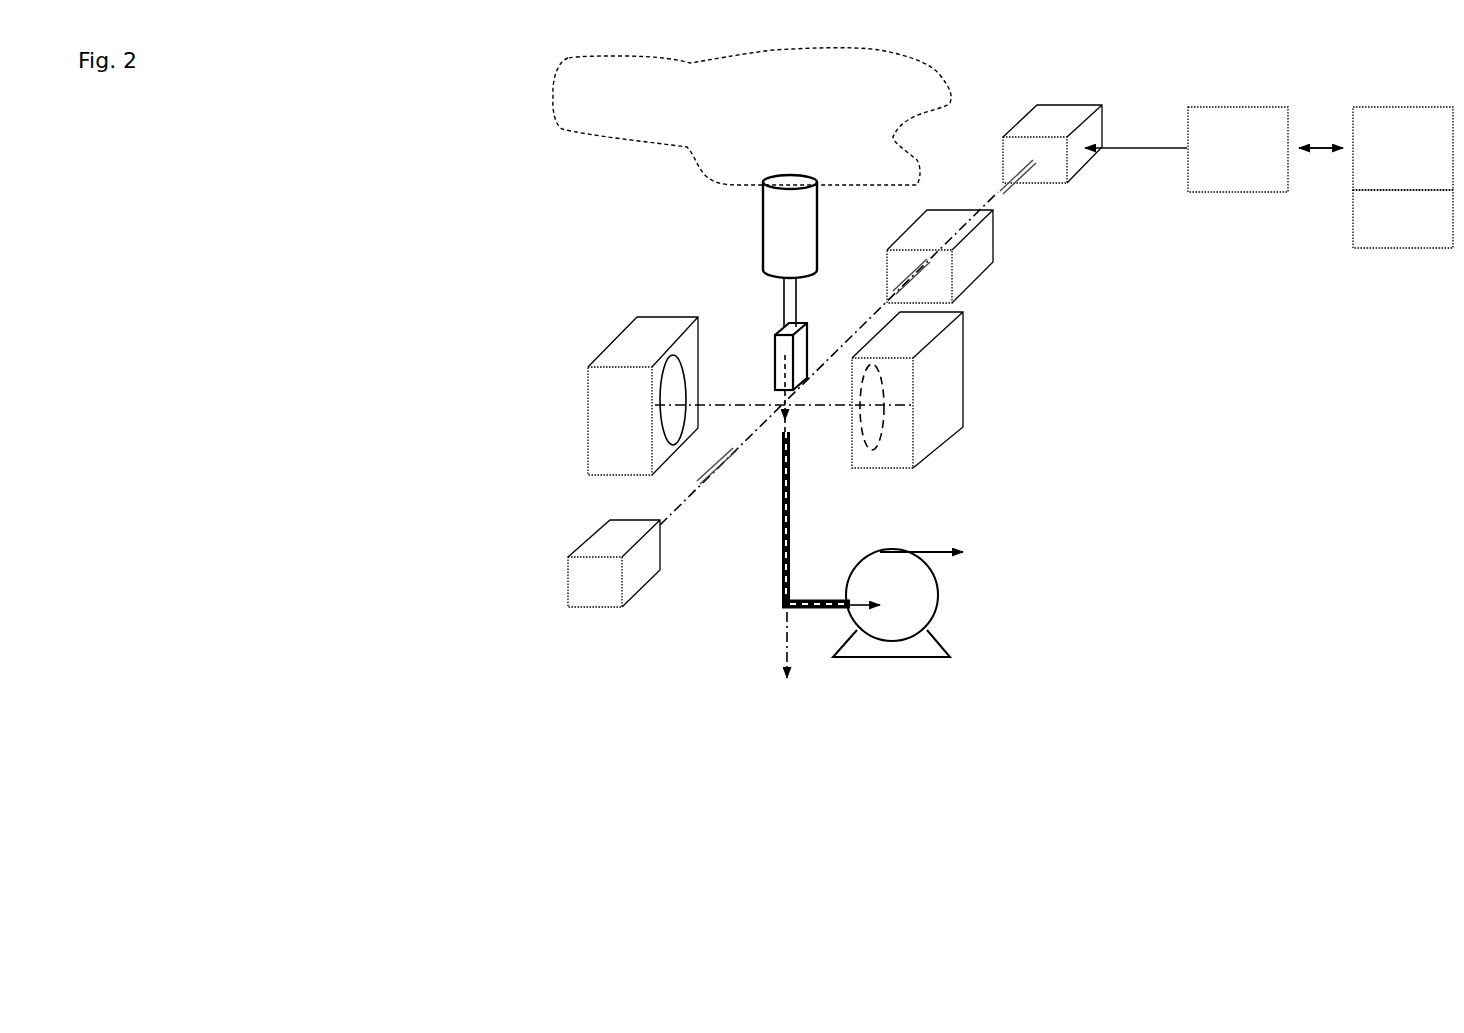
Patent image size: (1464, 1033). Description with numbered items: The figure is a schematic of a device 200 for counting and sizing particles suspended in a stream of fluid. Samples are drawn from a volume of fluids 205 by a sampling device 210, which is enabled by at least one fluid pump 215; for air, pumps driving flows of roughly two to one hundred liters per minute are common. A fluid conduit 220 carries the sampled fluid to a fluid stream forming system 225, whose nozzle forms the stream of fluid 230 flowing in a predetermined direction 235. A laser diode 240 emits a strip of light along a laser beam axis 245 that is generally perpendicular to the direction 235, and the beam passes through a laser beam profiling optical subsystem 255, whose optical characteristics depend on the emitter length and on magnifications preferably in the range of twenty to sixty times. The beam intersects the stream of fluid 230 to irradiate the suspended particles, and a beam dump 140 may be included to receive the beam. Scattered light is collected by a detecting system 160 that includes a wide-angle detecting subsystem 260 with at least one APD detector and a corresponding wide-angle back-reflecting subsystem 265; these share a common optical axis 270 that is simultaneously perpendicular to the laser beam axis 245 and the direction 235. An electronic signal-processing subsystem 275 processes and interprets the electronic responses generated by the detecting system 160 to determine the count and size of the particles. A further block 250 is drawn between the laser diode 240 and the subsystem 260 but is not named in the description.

The device for counting and sizing particles 200 is at (550, 178).
The volume of fluids 205 is at (786, 120).
The sampling device 210 is at (812, 232).
The fluid pump 215 is at (910, 590).
The fluid conduit 220 is at (777, 303).
The fluid stream forming system 225 is at (763, 337).
The stream of fluid 230 is at (793, 410).
The predetermined direction of the fluid flow 235 is at (773, 634).
The laser diode 240 is at (1074, 132).
The laser beam axis 245 is at (998, 200).
The controller 250 is at (1260, 154).
The laser beam profiling optical subsystem 255 is at (966, 239).
The wide-angle detecting subsystem 260 is at (1424, 153).
The wide-angle back-reflecting subsystem 265 is at (960, 419).
The common optical axis 270 is at (742, 410).
The electronic signal-processing subsystem 275 is at (1424, 224).
The detecting system 160 is at (325, 470).
The beam dump 140 is at (616, 591).